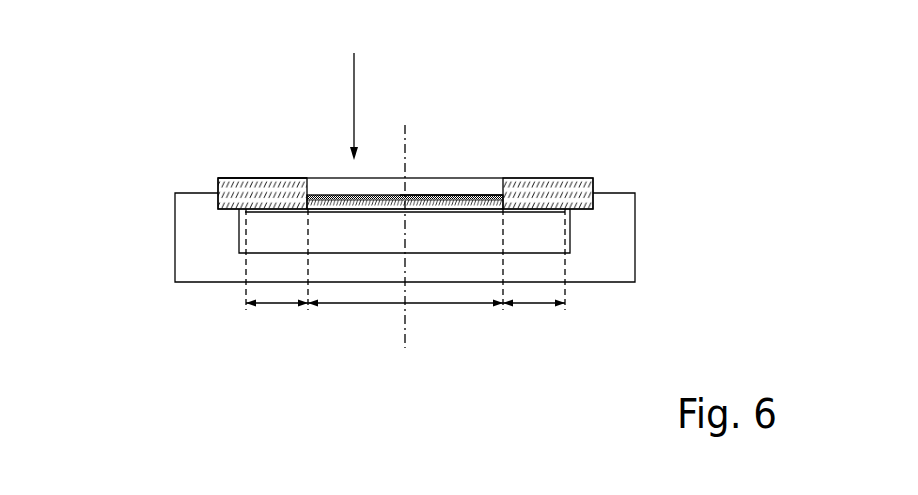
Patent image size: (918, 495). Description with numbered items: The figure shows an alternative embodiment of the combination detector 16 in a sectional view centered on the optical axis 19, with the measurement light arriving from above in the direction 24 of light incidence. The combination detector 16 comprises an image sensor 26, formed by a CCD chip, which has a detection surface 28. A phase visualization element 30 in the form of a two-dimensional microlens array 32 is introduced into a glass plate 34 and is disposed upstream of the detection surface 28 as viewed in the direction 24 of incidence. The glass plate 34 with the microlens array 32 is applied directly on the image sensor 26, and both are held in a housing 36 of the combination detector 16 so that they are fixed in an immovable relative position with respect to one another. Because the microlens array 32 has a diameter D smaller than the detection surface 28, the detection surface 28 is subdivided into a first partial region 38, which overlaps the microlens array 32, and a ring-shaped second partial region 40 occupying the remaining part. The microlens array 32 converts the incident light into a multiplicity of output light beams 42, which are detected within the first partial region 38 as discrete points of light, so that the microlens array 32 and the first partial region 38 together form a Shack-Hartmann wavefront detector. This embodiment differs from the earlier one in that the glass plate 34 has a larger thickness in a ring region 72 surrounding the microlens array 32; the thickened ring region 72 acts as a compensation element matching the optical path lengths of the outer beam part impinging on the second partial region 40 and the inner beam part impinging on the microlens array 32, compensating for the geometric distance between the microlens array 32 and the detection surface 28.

The combination detector 16 is at (408, 232).
The optical axis 19 is at (410, 145).
The direction of light incidence 24 is at (354, 102).
The image sensor 26 is at (570, 232).
The detection surface 28 is at (528, 198).
The phase visualization element 30 is at (331, 162).
The microlens array 32 is at (333, 197).
The glass plate 34 is at (217, 185).
The housing 36 is at (173, 253).
The first partial region 38 is at (353, 305).
The second partial region 40 is at (270, 305).
The output light beams 42 is at (450, 197).
The ring region 72 is at (227, 178).